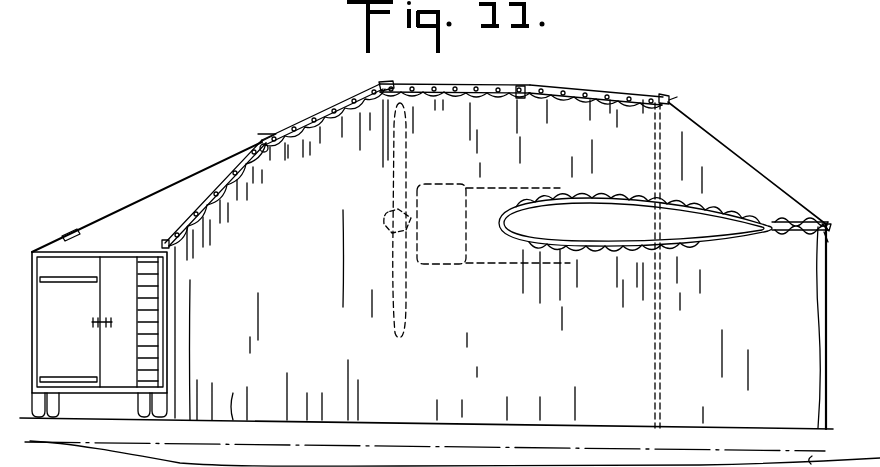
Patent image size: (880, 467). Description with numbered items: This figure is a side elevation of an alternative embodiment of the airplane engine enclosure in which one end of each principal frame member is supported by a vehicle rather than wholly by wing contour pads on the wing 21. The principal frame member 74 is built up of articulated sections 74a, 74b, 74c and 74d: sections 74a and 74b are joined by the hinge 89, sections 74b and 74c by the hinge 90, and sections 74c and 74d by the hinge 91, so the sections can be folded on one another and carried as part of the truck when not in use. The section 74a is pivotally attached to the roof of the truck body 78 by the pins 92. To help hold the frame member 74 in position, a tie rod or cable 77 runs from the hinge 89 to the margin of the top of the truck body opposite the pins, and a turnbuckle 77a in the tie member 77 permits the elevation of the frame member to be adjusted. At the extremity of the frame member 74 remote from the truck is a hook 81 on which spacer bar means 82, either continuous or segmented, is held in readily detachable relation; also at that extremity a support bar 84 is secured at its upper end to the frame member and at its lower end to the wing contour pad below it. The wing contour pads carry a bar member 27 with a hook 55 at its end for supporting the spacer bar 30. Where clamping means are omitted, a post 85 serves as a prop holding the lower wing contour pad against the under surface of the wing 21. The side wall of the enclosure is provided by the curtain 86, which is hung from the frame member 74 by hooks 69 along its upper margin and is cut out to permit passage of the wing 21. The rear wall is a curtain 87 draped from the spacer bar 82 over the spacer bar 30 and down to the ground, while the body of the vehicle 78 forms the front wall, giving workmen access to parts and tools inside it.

The wing 21 is at (610, 244).
The bar member 27 is at (788, 222).
The spacer bar 30 is at (827, 224).
The hook 55 is at (823, 250).
The hooks 69 is at (462, 97).
The principal frame member 74 is at (414, 147).
The frame member section 74a is at (223, 194).
The frame member section 74b is at (310, 128).
The frame member section 74c is at (462, 86).
The frame member section 74d is at (584, 90).
The tie rod or cable 77 is at (124, 210).
The turnbuckle 77a is at (70, 228).
The truck body 78 is at (128, 308).
The hook 81 is at (678, 97).
The spacer bar means 82 is at (662, 94).
The support bar 84 is at (654, 152).
The post 85 is at (655, 341).
The curtain 86 is at (228, 421).
The curtain 87 is at (730, 151).
The hinge 89 is at (268, 152).
The hinge 90 is at (386, 84).
The hinge 91 is at (521, 86).
The pins 92 is at (161, 245).